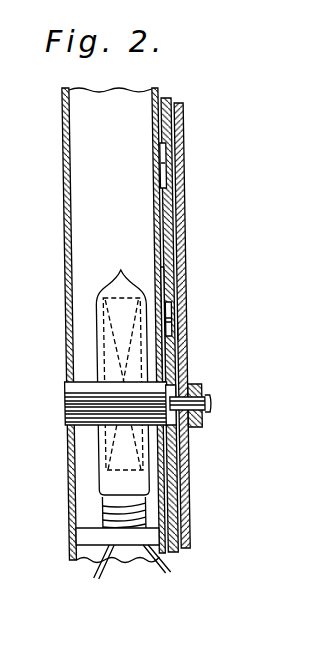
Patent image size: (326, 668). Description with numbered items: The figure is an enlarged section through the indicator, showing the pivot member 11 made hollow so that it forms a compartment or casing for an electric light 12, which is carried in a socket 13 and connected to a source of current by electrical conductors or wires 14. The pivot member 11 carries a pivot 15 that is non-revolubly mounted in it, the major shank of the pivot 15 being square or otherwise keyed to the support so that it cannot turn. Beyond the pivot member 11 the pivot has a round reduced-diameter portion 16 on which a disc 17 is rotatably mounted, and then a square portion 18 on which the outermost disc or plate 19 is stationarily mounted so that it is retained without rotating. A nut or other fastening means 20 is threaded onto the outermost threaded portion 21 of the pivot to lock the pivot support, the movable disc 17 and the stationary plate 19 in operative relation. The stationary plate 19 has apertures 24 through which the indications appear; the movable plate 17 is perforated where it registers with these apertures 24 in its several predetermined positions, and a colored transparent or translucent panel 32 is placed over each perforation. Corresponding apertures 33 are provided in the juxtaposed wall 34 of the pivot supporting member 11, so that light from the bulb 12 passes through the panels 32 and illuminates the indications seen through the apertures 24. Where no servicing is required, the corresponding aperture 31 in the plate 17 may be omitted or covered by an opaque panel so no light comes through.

The pivot member 11 is at (115, 186).
The electric light 12 is at (112, 289).
The socket 13 is at (99, 512).
The electrical conductor 14 is at (167, 573).
The pivot 15 is at (88, 424).
The reduced-diameter portion 16 is at (188, 381).
The disc 17 is at (166, 97).
The portion of the pivot 18 is at (201, 389).
The outermost disc or plate 19 is at (185, 202).
The nut 20 is at (198, 419).
The threaded portion 21 is at (207, 404).
The aperture 24 is at (183, 329).
The aperture 31 is at (172, 322).
The transparent or translucent panel 32 is at (165, 163).
The aperture 33 is at (160, 277).
The wall 34 is at (162, 146).